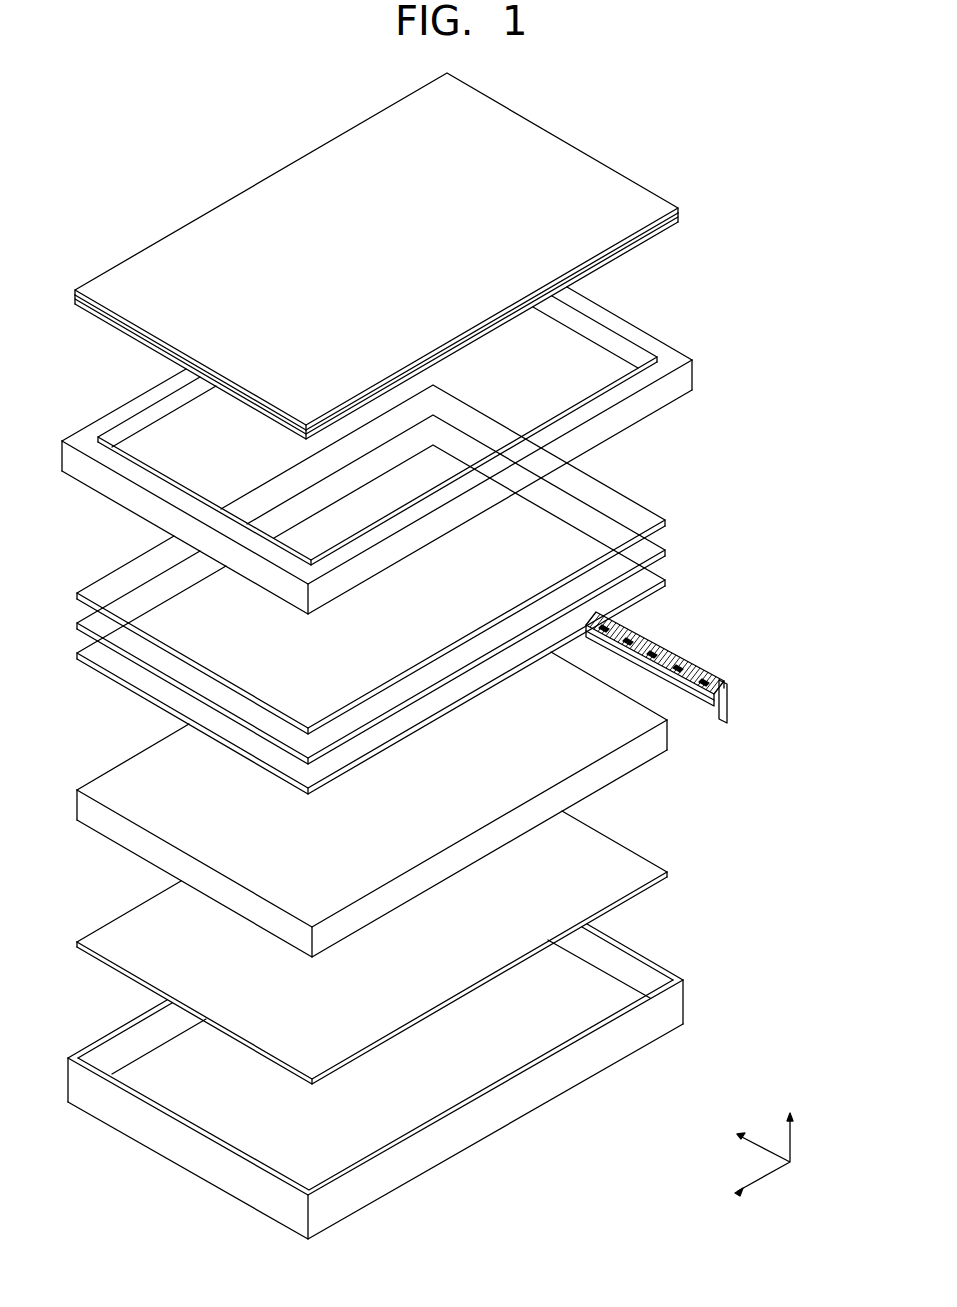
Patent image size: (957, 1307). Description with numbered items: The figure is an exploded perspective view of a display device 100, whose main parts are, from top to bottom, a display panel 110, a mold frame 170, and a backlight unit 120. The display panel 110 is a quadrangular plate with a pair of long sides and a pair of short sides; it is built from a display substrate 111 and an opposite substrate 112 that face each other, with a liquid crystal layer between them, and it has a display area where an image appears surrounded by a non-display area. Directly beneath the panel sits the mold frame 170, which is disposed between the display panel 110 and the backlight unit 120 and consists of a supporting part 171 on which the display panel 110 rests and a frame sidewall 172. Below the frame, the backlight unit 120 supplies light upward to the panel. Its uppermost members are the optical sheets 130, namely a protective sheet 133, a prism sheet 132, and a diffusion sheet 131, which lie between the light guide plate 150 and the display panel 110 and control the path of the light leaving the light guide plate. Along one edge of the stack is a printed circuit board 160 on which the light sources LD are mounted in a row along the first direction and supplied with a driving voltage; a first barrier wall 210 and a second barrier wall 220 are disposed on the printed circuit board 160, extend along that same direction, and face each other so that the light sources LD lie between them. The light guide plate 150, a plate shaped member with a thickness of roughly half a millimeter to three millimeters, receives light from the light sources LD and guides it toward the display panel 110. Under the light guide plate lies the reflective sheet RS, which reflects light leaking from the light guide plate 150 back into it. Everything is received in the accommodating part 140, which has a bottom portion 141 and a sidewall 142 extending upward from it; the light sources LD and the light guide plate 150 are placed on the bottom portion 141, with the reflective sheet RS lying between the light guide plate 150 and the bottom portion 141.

The display device 100 is at (584, 141).
The display panel 110 is at (757, 192).
The display substrate 111 is at (683, 220).
The opposite substrate 112 is at (679, 207).
The backlight unit 120 is at (804, 508).
The optical sheets 130 is at (757, 503).
The diffusion sheet 131 is at (668, 580).
The prism sheet 132 is at (668, 551).
The protective sheet 133 is at (668, 522).
The accommodating part 140 is at (757, 950).
The bottom portion 141 is at (597, 993).
The sidewall 142 is at (677, 1010).
The light guide plate 150 is at (657, 732).
The printed circuit board 160 is at (680, 648).
The light sources LD is at (703, 680).
The first barrier wall 210 is at (728, 697).
The second barrier wall 220 is at (730, 722).
The mold frame 170 is at (757, 330).
The supporting part 171 is at (661, 347).
The frame sidewall 172 is at (676, 392).
The reflective sheet RS is at (639, 866).